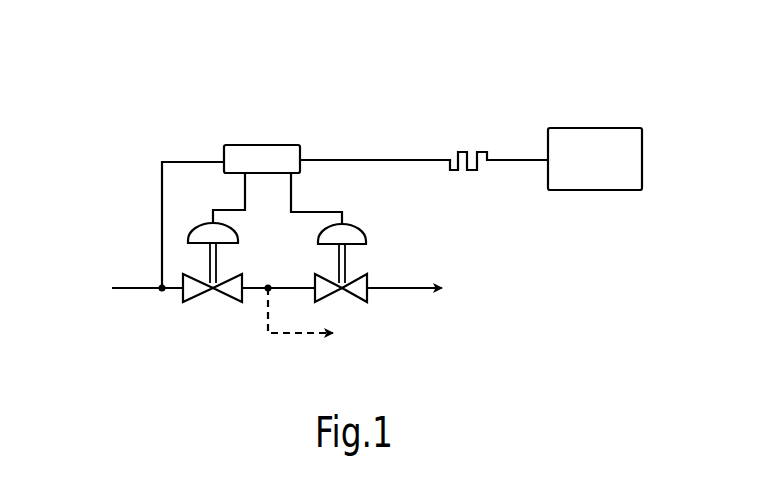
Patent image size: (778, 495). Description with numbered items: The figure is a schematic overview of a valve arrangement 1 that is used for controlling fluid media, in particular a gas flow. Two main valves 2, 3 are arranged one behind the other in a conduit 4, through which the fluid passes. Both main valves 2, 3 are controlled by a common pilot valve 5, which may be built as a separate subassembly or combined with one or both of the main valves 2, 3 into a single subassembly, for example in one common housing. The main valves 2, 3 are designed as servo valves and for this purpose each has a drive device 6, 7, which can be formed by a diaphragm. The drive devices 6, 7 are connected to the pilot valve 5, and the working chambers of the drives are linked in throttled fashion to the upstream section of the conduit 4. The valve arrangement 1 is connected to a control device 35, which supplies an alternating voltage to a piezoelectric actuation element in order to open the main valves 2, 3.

The valve arrangement 1 is at (402, 116).
The main valve 2 is at (210, 324).
The main valve 3 is at (349, 305).
The conduit 4 is at (410, 288).
The pilot valve 5 is at (273, 128).
The drive device 6 is at (238, 238).
The drive device 7 is at (362, 229).
The control device 35 is at (588, 173).